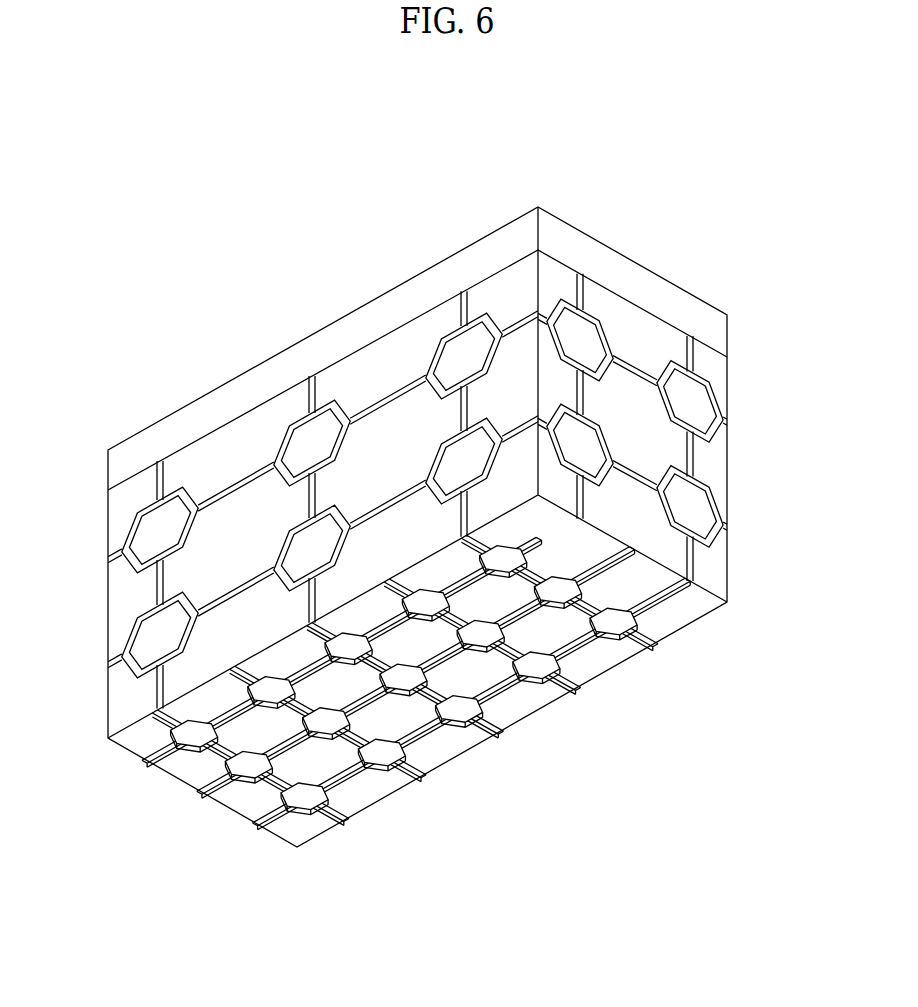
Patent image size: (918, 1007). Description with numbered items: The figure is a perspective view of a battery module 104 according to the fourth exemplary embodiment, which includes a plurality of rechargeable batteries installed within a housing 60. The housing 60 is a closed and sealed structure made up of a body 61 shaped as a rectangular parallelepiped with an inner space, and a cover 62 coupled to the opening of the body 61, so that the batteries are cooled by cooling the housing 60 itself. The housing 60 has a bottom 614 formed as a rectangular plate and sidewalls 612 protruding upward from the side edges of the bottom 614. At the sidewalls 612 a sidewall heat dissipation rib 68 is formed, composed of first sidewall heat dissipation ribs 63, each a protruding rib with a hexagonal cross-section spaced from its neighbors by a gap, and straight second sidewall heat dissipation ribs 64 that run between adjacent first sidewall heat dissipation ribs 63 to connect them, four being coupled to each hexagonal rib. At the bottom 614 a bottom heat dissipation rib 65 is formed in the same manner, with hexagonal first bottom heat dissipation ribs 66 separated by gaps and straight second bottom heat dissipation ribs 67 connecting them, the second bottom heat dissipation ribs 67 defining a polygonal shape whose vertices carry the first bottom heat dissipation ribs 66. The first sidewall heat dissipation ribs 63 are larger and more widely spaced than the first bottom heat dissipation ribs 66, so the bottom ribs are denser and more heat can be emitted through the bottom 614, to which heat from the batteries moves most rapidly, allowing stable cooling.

The housing 60 is at (596, 220).
The body 61 is at (738, 470).
The cover 62 is at (630, 275).
The first sidewall heat dissipation rib 63 is at (128, 531).
The second sidewall heat dissipation rib 64 is at (112, 568).
The bottom heat dissipation rib 65 is at (362, 920).
The first bottom heat dissipation rib 66 is at (305, 816).
The second bottom heat dissipation rib 67 is at (341, 826).
The sidewall heat dissipation rib 68 is at (63, 528).
The battery module 104 is at (297, 316).
The sidewall 612 is at (712, 380).
The bottom 614 is at (700, 614).